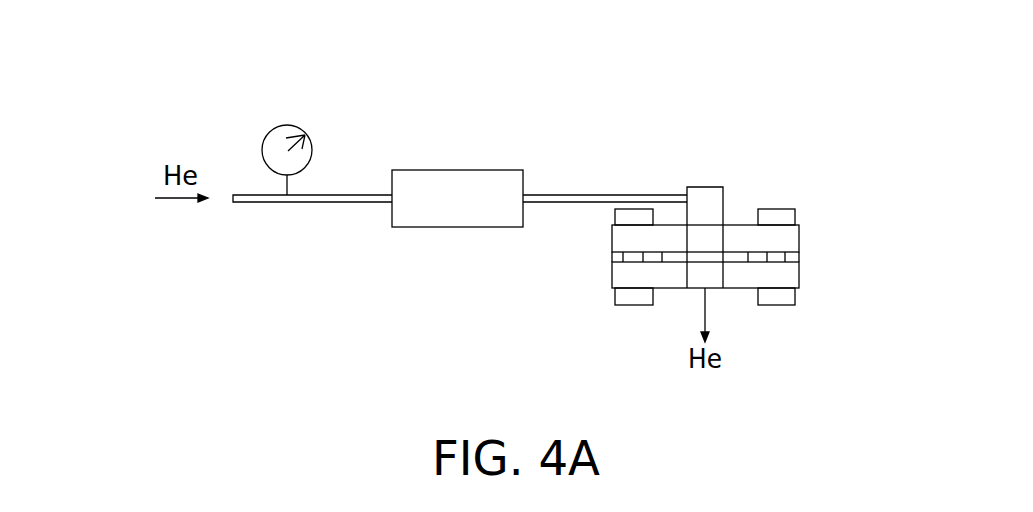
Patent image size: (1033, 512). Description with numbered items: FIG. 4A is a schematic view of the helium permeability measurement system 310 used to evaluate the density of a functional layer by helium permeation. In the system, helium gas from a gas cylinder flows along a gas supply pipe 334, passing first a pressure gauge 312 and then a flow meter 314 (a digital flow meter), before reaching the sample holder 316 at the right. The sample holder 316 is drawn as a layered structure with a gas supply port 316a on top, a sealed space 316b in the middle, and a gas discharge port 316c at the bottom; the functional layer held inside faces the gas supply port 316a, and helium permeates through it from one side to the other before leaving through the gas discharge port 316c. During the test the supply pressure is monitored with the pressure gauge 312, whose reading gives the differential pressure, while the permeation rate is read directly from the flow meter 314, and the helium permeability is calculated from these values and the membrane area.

The helium permeability measurement system 310 is at (747, 75).
The pressure gauge 312 is at (280, 127).
The flow meter 314 is at (465, 192).
The gas supply pipe 334 is at (572, 193).
The sample holder 316 is at (775, 165).
The gas supply port 316a is at (723, 238).
The sealed space 316b is at (747, 260).
The gas discharge port 316c is at (723, 272).